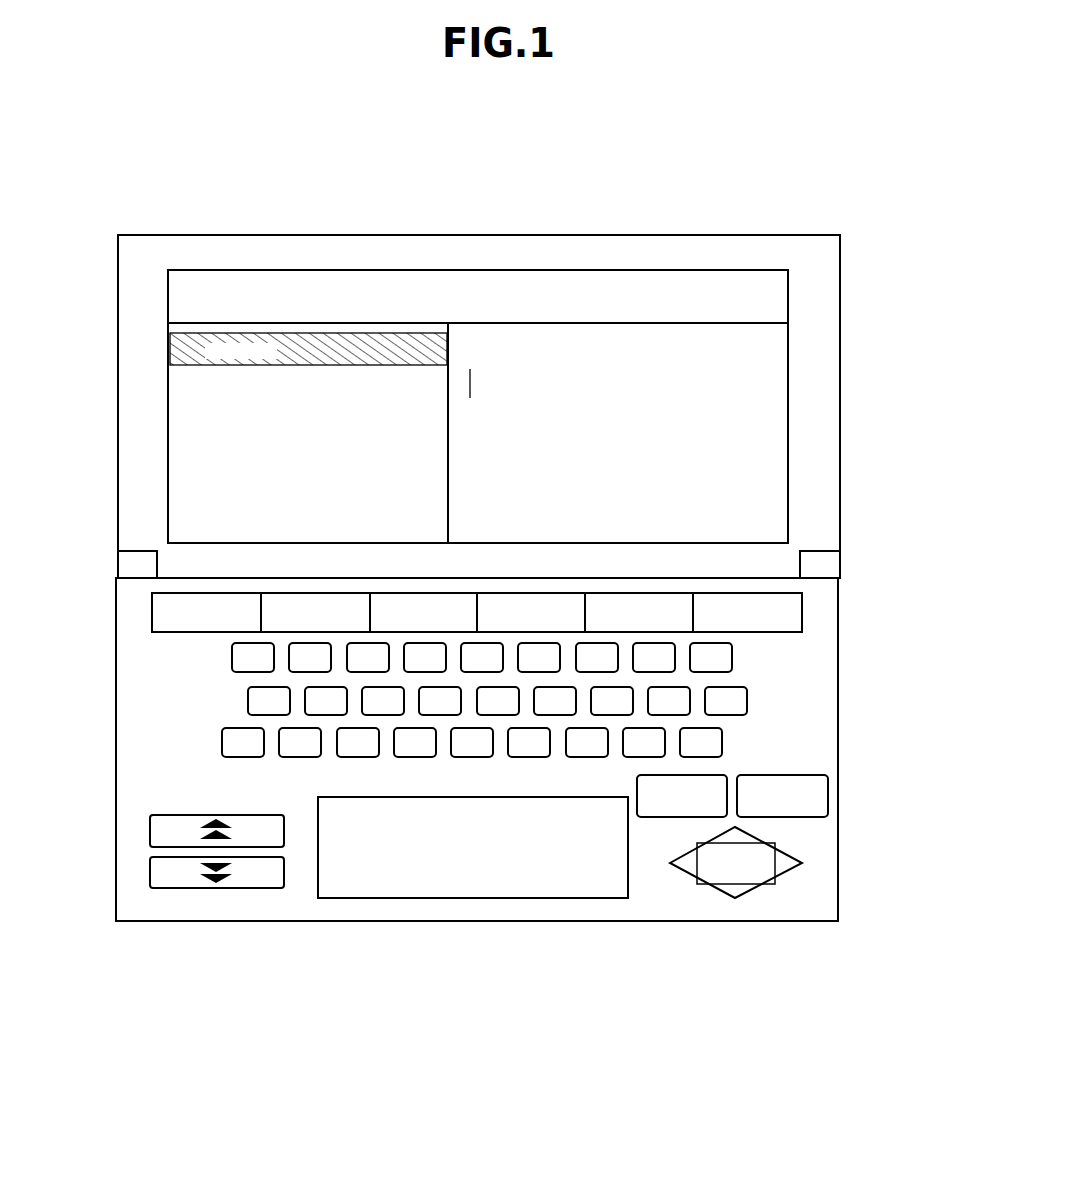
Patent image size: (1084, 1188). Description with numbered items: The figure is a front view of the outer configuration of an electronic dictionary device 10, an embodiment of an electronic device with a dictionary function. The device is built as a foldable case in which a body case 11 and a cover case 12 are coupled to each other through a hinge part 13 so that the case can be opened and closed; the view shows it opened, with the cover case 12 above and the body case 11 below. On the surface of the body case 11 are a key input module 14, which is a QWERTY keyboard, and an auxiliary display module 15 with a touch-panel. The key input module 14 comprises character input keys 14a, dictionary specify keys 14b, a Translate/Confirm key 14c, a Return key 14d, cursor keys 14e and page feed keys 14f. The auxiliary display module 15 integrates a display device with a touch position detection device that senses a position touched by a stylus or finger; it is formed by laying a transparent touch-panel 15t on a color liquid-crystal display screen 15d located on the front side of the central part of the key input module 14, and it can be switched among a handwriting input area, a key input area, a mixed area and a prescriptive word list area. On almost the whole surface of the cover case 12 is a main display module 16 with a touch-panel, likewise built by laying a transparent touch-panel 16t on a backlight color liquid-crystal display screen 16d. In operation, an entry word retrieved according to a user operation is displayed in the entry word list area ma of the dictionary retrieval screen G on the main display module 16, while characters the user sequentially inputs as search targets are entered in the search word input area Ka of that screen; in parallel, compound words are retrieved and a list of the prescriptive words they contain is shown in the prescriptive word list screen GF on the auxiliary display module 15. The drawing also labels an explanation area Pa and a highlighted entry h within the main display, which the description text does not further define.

The electronic dictionary device 10 is at (750, 184).
The body case 11 is at (125, 728).
The cover case 12 is at (130, 400).
The hinge part 13 is at (130, 558).
The key input module 14 is at (903, 578).
The character input keys 14a is at (843, 638).
The dictionary specify keys 14b is at (843, 578).
The Translate/Confirm key 14c is at (828, 798).
The Return key 14d is at (718, 808).
The cursor keys 14e is at (748, 858).
The page feed keys 14f is at (148, 895).
The auxiliary display module 15 is at (528, 986).
The liquid-crystal display screen 15d is at (447, 888).
The transparent touch-panel 15t is at (493, 888).
The main display module 16 is at (530, 184).
The backlight color liquid-crystal display screen 16d is at (428, 283).
The transparent touch-panel 16t is at (500, 283).
The dictionary retrieval screen G is at (598, 268).
The search word input area Ka is at (676, 290).
The explanation display area Pa is at (770, 430).
The highlighted entry h is at (170, 342).
The entry word list area ma is at (176, 478).
The prescriptive word list screen GF is at (600, 880).